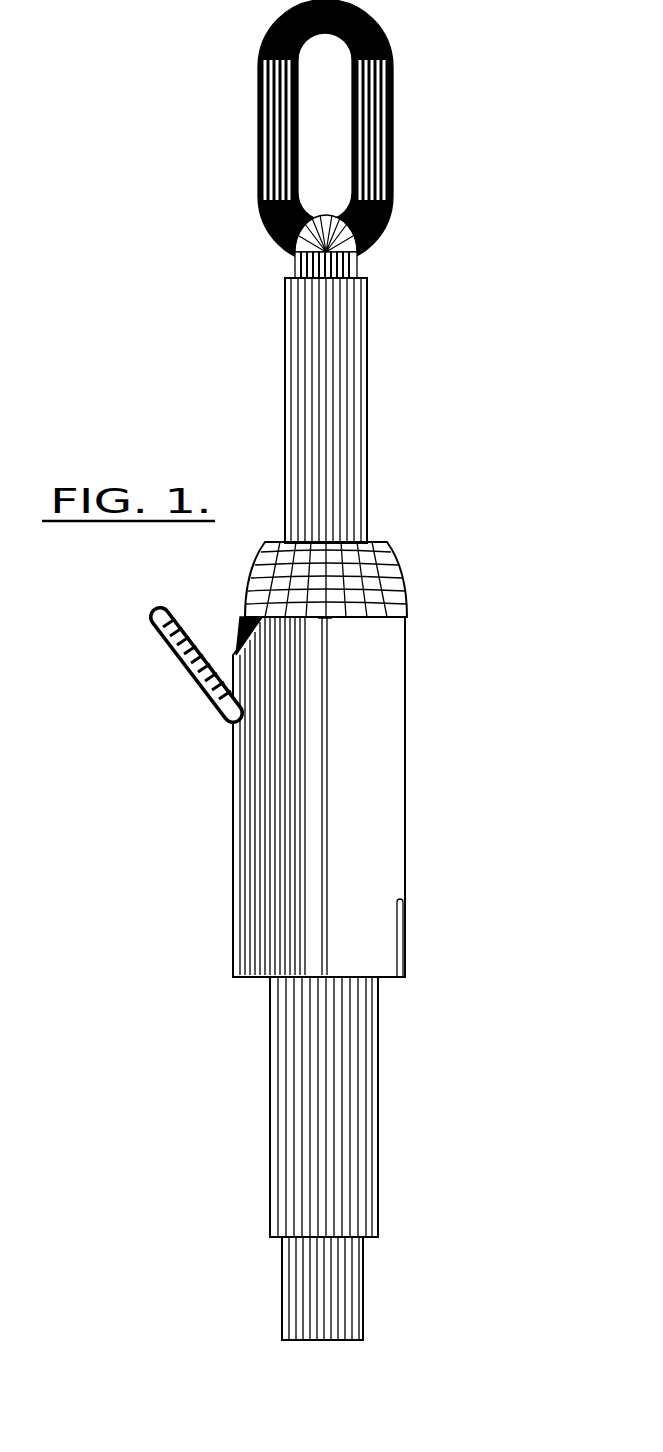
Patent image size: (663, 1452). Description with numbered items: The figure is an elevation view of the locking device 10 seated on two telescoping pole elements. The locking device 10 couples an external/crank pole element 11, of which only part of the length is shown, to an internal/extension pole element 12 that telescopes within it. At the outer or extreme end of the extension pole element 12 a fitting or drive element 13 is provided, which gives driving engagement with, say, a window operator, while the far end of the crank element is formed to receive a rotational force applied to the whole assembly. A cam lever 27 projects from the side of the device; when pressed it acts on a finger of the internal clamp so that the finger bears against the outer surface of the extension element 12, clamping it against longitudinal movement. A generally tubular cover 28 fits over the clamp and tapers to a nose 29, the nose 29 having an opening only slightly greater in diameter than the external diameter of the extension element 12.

The locking device 10 is at (413, 640).
The external/crank pole element 11 is at (308, 1070).
The internal/extension pole element 12 is at (340, 369).
The fitting or drive element 13 is at (257, 148).
The cam lever 27 is at (170, 643).
The cover 28 is at (382, 834).
The nose 29 is at (362, 551).